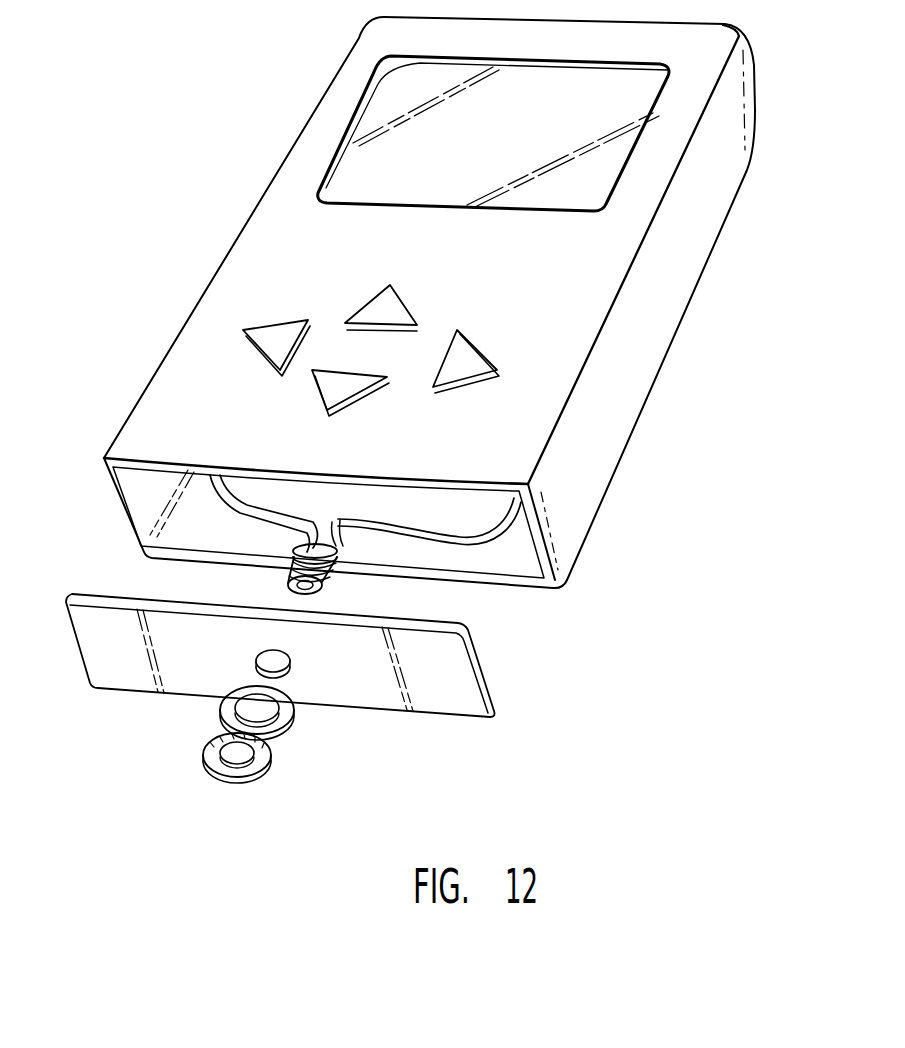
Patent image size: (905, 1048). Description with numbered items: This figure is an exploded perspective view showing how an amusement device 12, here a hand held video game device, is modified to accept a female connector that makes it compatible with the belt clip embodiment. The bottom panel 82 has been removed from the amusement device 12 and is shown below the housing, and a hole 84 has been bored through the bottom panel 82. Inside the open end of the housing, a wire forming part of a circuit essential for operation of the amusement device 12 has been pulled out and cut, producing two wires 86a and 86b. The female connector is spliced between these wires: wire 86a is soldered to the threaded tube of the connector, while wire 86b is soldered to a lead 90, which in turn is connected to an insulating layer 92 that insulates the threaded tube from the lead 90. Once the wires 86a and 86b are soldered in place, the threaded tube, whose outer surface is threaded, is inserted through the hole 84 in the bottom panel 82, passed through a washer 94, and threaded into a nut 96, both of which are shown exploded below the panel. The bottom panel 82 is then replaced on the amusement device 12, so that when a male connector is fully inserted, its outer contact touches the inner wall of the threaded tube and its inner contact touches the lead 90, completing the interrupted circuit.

The amusement device 12 is at (703, 212).
The bottom panel 82 is at (463, 693).
The hole 84 is at (253, 658).
The wire 86a is at (245, 492).
The wire 86b is at (513, 537).
The lead 90 is at (335, 522).
The insulating layer 92 is at (327, 585).
The washer 94 is at (283, 723).
The nut 96 is at (217, 773).